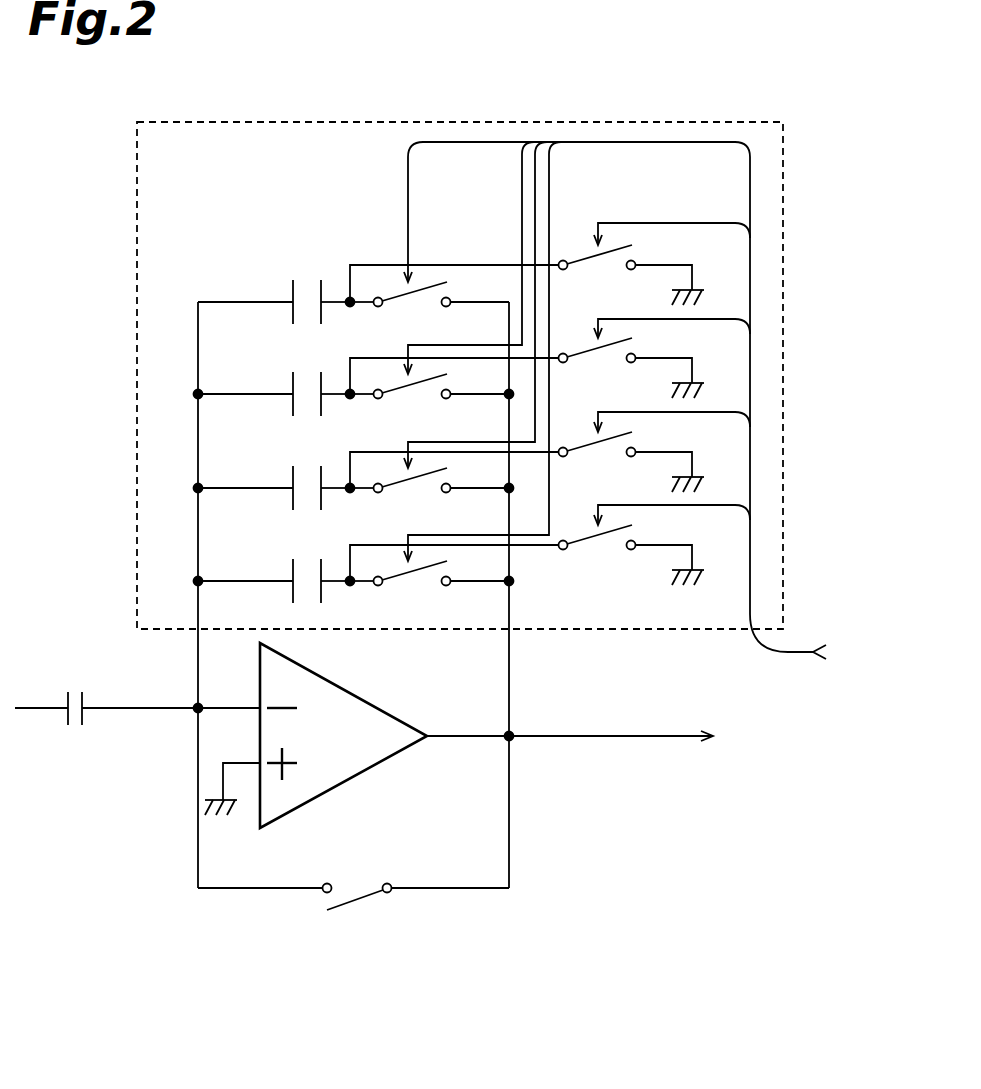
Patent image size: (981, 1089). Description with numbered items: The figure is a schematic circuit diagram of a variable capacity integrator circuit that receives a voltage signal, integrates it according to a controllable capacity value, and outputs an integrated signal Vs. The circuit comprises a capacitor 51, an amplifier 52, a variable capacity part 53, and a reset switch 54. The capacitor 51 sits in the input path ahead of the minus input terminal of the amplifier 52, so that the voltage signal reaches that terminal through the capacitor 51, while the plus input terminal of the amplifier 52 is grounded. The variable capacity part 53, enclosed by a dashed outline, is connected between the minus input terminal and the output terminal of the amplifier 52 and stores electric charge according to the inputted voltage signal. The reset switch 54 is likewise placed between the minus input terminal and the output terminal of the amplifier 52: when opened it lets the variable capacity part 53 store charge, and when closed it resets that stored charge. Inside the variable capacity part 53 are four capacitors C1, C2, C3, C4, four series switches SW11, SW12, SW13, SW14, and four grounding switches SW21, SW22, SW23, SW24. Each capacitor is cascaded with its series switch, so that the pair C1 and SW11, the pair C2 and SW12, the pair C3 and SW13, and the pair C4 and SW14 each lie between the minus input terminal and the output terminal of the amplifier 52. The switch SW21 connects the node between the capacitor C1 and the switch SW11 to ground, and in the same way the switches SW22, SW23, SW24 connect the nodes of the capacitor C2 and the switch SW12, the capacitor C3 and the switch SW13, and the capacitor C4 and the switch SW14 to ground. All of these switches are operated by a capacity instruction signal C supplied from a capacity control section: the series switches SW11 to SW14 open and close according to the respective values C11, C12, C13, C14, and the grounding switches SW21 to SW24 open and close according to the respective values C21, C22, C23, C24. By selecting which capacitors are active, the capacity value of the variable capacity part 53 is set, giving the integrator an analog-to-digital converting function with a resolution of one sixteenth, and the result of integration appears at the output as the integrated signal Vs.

The capacitor 51 is at (73, 727).
The amplifier 52 is at (337, 790).
The variable capacity part 53 is at (137, 340).
The reset switch 54 is at (358, 880).
The capacitor C1 is at (274, 306).
The capacitor C2 is at (274, 398).
The capacitor C3 is at (274, 492).
The capacitor C4 is at (274, 585).
The switch SW11 is at (428, 313).
The switch SW12 is at (430, 405).
The switch SW13 is at (430, 500).
The switch SW14 is at (430, 592).
The switch SW21 is at (632, 276).
The switch SW22 is at (632, 369).
The switch SW23 is at (632, 462).
The switch SW24 is at (632, 556).
The value of the capacity instruction signal C11 is at (577, 212).
The value of the capacity instruction signal C12 is at (469, 258).
The value of the capacity instruction signal C13 is at (475, 305).
The value of the capacity instruction signal C14 is at (482, 351).
The value of the capacity instruction signal C21 is at (672, 221).
The value of the capacity instruction signal C22 is at (672, 315).
The value of the capacity instruction signal C23 is at (672, 409).
The value of the capacity instruction signal C24 is at (672, 502).
The capacity instruction signal C is at (801, 412).
The integrated signal Vs is at (584, 737).